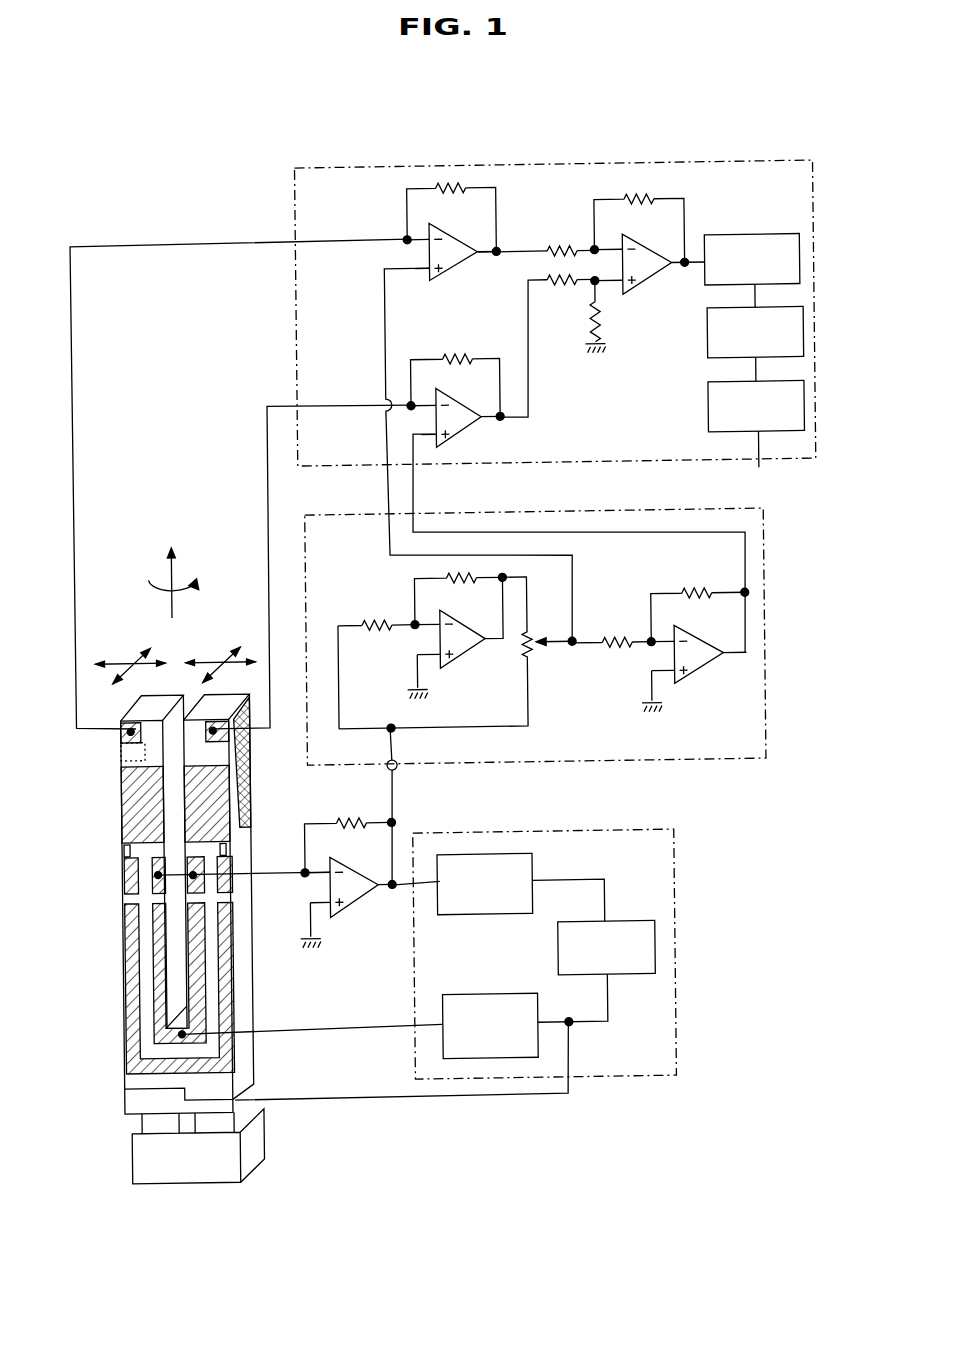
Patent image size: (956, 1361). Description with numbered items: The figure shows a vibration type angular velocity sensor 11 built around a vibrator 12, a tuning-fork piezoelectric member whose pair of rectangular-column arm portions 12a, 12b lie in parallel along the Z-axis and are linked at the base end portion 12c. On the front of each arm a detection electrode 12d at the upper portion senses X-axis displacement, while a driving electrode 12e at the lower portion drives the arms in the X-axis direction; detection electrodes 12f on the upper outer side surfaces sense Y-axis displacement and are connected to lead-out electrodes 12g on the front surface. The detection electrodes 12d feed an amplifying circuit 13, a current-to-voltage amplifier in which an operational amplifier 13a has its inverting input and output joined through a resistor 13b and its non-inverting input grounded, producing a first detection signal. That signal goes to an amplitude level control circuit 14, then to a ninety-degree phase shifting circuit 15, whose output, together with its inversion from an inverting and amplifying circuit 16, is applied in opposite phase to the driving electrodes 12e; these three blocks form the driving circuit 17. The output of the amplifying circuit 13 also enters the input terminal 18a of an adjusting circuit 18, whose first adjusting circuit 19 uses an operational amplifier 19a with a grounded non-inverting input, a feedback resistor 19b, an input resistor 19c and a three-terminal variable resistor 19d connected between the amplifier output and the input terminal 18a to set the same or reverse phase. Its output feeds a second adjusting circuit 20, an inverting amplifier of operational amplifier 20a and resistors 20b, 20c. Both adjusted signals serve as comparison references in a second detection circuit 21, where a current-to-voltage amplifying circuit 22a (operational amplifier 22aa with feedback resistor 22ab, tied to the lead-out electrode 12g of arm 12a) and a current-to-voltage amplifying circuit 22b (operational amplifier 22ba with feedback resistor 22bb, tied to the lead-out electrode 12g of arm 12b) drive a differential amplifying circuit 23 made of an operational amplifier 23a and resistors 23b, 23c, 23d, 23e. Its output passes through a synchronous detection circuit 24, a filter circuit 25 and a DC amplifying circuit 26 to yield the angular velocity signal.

The vibration type angular velocity sensor 11 is at (206, 162).
The vibrator 12 is at (112, 812).
The arm portion 12a is at (123, 848).
The arm portion 12b is at (240, 848).
The base end portion 12c is at (182, 1120).
The detection electrode 12d is at (150, 888).
The driving electrode 12e is at (130, 938).
The detection electrode 12f is at (123, 768).
The lead-out electrode 12g is at (120, 742).
The amplifying circuit 13 is at (348, 895).
The operational amplifier 13a is at (355, 903).
The resistor 13b is at (353, 813).
The amplitude level control circuit 14 is at (462, 913).
The 90-degree phase shifting circuit 15 is at (630, 918).
The inverting and amplifying circuit 16 is at (493, 993).
The driving circuit 17 is at (676, 950).
The adjusting circuit 18 is at (764, 612).
The input terminal 18a is at (388, 776).
The first adjusting circuit 19 is at (464, 642).
The operational amplifier 19a is at (473, 643).
The resistor 19b is at (455, 578).
The resistor 19c is at (372, 613).
The variable resistor 19d is at (540, 650).
The second adjusting circuit 20 is at (665, 640).
The operational amplifier 20a is at (703, 668).
The resistor 20b is at (696, 575).
The resistor 20c is at (617, 625).
The second detection circuit 21 is at (538, 163).
The current-to-voltage amplifying circuit 22a is at (461, 222).
The operational amplifier 22aa is at (434, 280).
The resistor 22ab is at (451, 178).
The current-to-voltage amplifying circuit 22b is at (485, 386).
The operational amplifier 22ba is at (464, 432).
The resistor 22bb is at (452, 352).
The differential amplifying circuit 23 is at (644, 245).
The operational amplifier 23a is at (659, 272).
The resistor 23b is at (640, 185).
The resistor 23c is at (554, 247).
The resistor 23d is at (558, 302).
The resistor 23e is at (606, 322).
The synchronous detection circuit 24 is at (801, 262).
The filter circuit 25 is at (804, 331).
The DC amplifying circuit 26 is at (804, 405).